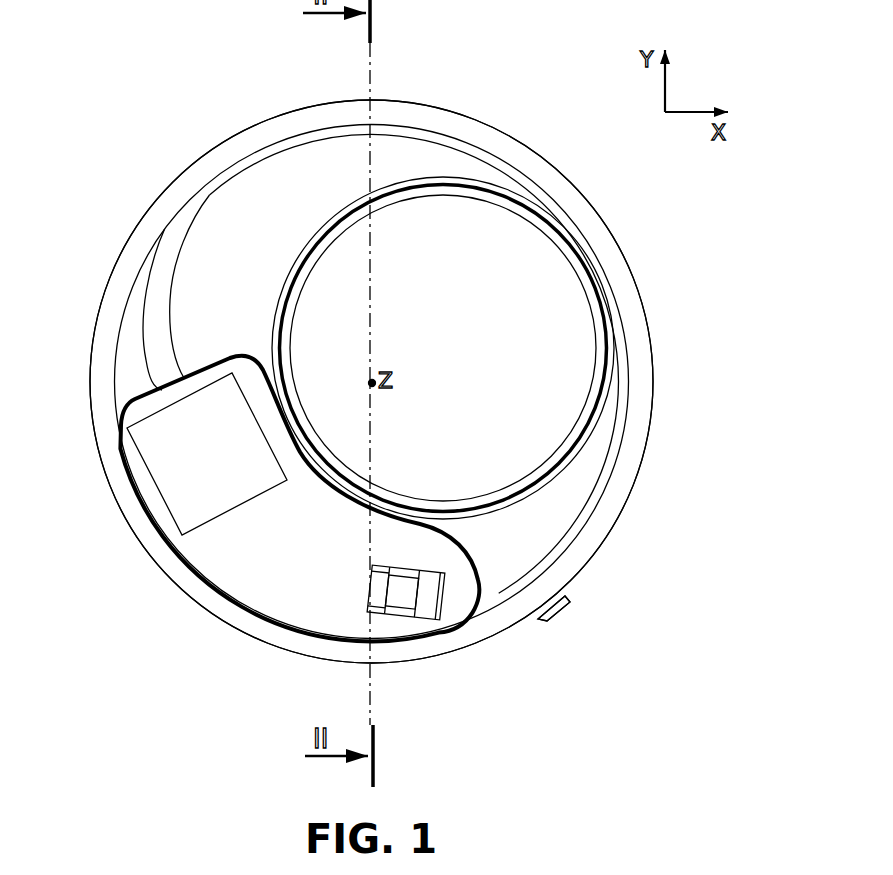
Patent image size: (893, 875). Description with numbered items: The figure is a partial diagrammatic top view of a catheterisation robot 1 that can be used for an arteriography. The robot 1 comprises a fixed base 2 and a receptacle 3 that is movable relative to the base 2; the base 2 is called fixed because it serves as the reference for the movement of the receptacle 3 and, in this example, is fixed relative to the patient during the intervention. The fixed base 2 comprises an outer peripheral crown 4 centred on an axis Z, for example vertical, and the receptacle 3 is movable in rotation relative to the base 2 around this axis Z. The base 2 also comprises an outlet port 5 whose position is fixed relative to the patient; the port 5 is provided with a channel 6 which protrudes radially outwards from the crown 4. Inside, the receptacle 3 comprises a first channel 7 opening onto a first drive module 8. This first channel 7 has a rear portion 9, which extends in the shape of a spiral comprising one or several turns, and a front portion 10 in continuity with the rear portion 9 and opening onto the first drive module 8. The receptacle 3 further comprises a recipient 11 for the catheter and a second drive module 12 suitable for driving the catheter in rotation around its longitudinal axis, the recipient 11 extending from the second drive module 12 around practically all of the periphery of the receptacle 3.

The catheterisation robot 1 is at (668, 578).
The fixed base 2 is at (645, 466).
The receptacle 3 is at (427, 163).
The outer peripheral crown 4 is at (607, 245).
The outlet port 5 is at (568, 598).
The channel 6 is at (558, 608).
The first channel 7 is at (463, 180).
The first drive module 8 is at (152, 483).
The rear portion 9 is at (305, 234).
The front portion 10 is at (152, 243).
The recipient 11 is at (258, 573).
The second drive module 12 is at (400, 620).